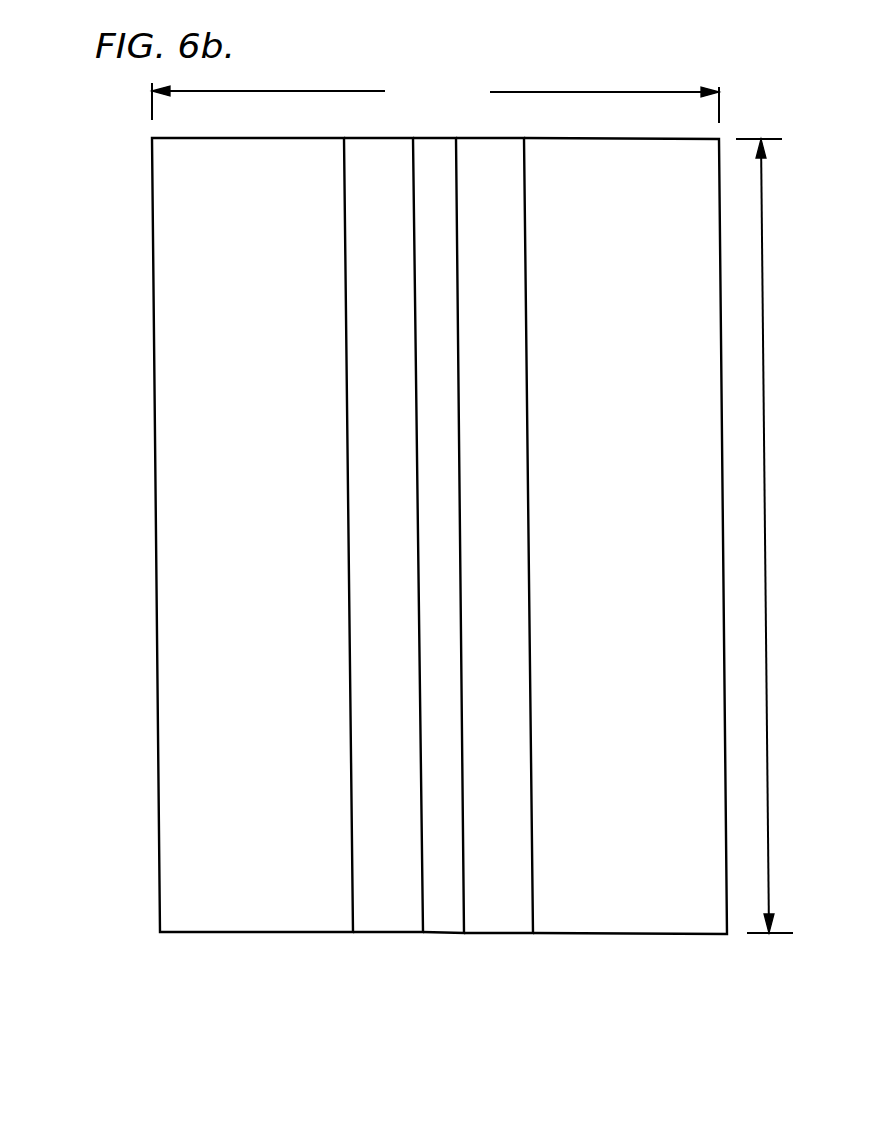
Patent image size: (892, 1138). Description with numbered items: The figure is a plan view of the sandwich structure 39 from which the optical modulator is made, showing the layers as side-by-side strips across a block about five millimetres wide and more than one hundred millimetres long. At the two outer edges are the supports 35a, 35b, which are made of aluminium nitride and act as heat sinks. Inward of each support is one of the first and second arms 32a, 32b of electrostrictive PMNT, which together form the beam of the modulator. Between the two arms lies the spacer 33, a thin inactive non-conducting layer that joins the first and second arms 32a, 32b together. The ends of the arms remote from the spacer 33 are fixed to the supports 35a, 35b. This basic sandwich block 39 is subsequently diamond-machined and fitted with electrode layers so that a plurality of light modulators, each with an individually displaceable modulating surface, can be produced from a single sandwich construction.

The sandwich structure 39 is at (136, 153).
The support 35a is at (207, 921).
The first arm 32a is at (395, 921).
The spacer 33 is at (435, 923).
The second arm 32b is at (490, 923).
The support 35b is at (628, 923).